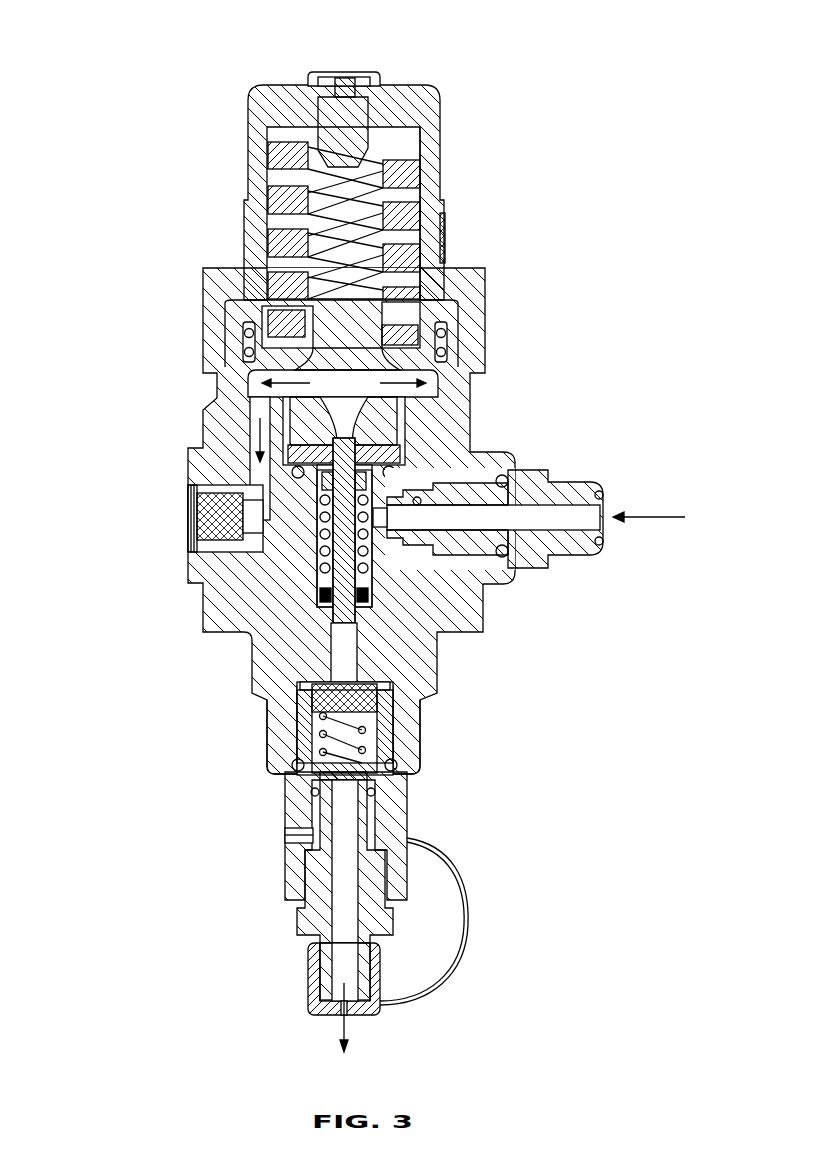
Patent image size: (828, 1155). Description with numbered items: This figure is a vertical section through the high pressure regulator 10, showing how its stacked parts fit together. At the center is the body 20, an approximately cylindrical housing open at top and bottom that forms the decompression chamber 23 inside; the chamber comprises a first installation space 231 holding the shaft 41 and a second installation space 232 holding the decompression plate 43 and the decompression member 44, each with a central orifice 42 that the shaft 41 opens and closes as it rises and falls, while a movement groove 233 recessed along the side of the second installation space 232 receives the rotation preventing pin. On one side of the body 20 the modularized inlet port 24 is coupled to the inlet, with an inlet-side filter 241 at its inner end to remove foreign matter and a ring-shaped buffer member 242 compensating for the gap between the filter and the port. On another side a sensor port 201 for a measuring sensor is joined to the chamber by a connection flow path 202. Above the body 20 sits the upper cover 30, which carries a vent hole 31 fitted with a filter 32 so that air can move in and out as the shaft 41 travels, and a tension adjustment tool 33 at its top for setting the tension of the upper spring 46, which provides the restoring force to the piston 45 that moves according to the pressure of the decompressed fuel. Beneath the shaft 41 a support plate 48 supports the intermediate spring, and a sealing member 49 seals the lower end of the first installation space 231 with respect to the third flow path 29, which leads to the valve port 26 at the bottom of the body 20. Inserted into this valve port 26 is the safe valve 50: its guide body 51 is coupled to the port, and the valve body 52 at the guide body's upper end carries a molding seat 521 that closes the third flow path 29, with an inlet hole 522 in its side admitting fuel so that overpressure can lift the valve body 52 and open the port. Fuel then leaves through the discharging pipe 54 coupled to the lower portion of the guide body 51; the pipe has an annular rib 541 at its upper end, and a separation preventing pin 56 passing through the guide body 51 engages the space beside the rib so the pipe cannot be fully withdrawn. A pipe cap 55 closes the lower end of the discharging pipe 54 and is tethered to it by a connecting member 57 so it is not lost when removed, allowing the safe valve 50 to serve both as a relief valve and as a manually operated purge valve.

The high pressure regulator 10 is at (70, 136).
The body 20 is at (240, 597).
The sensor port 201 is at (188, 540).
The connection flow path 202 is at (260, 412).
The decompression chamber 23 is at (82, 452).
The first installation space 231 is at (190, 505).
The second installation space 232 is at (300, 440).
The movement groove 233 is at (280, 477).
The inlet port 24 is at (567, 478).
The inlet-side filter 241 is at (505, 470).
The buffer member 242 is at (470, 500).
The valve port 26 is at (407, 702).
The third flow path 29 is at (347, 660).
The upper cover 30 is at (438, 92).
The vent hole 31 is at (430, 230).
The filter 32 is at (447, 222).
The tension adjustment tool 33 is at (347, 72).
The shaft 41 is at (502, 552).
The orifice 42 is at (400, 420).
The decompression plate 43 is at (405, 446).
The decompression member 44 is at (400, 366).
The piston 45 is at (263, 328).
The upper spring 46 is at (265, 183).
The support plate 48 is at (375, 545).
The sealing member 49 is at (372, 605).
The safe valve 50 is at (356, 909).
The guide body 51 is at (407, 820).
The valve body 52 is at (300, 688).
The molding seat 521 is at (400, 725).
The inlet hole 522 is at (305, 752).
The annular rib 541 is at (355, 768).
The discharging pipe 54 is at (378, 917).
The pipe cap 55 is at (312, 978).
The separation preventing pin 56 is at (285, 858).
The connecting member 57 is at (465, 880).